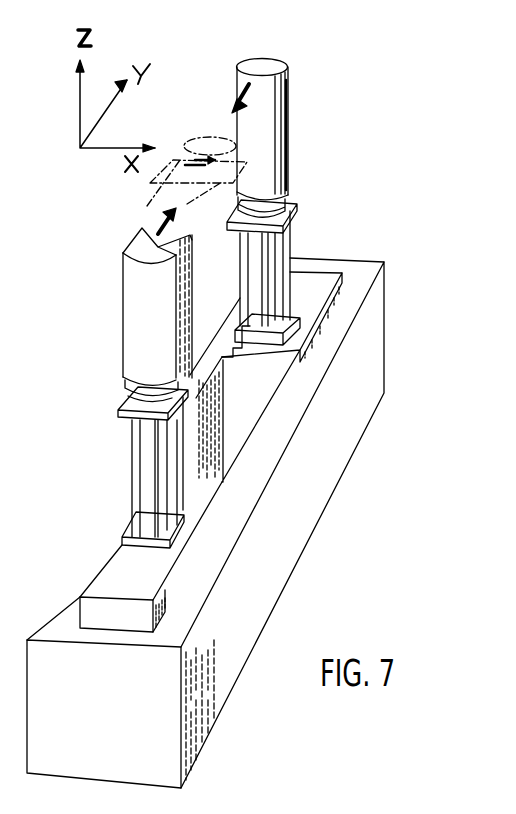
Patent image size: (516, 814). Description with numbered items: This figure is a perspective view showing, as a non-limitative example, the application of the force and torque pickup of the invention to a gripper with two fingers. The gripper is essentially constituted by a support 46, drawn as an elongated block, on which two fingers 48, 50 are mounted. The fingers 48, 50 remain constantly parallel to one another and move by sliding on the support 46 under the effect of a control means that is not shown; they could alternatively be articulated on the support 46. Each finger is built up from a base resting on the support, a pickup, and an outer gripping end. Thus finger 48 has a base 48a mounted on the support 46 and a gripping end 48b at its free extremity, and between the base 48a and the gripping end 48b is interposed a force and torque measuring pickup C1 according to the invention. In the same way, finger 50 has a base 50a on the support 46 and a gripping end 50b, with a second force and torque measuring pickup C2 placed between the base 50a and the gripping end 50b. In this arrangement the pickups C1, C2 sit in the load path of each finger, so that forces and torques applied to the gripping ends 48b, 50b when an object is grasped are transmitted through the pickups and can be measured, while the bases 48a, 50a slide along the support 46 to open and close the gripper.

The support 46 is at (378, 322).
The finger 48 is at (307, 136).
The base 48a is at (320, 283).
The gripping end 48b is at (285, 82).
The force and torque measuring pickup C1 is at (308, 209).
The finger 50 is at (127, 315).
The base 50a is at (115, 562).
The gripping end 50b is at (130, 305).
The force and torque measuring pickup C2 is at (108, 450).